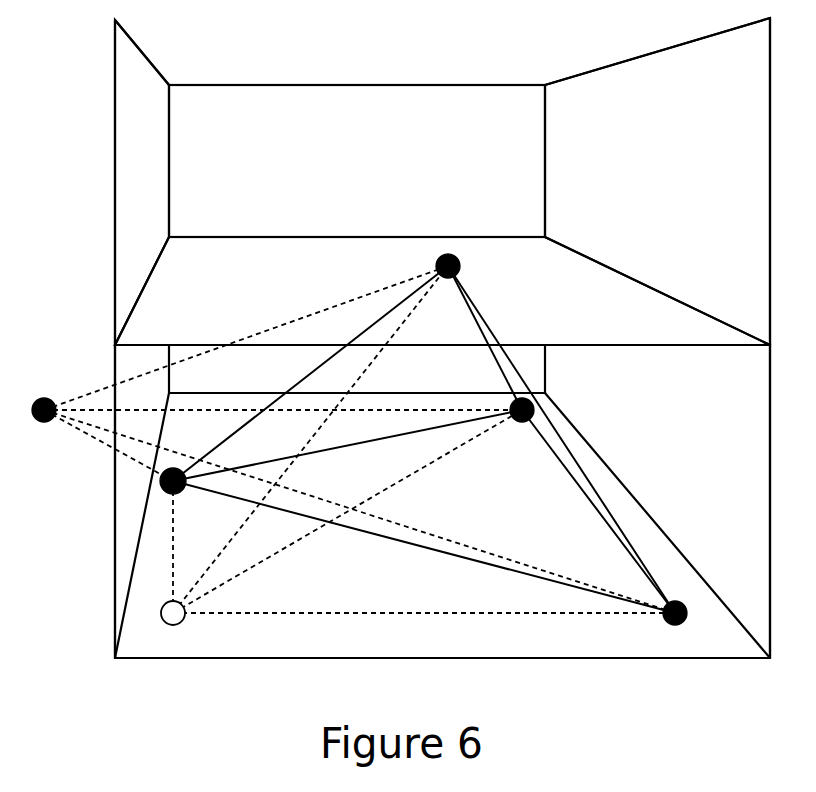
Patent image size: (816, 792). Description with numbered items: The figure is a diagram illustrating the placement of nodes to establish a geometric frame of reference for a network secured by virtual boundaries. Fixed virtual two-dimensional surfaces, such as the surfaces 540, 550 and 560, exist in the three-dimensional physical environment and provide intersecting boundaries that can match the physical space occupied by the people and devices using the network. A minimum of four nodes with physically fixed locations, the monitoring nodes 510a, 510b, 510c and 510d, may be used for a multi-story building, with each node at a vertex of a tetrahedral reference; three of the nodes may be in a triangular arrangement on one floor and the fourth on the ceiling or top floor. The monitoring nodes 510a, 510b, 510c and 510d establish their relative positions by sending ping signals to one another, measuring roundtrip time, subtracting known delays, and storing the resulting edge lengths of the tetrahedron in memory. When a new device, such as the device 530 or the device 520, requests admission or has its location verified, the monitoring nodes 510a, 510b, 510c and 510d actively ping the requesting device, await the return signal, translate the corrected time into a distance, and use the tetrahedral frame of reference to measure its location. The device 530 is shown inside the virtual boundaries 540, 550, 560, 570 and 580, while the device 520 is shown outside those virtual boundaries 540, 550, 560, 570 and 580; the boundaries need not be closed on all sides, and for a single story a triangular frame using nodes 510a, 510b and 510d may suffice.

The monitoring node 510a is at (687, 610).
The monitoring node 510b is at (520, 422).
The monitoring node 510c is at (460, 259).
The monitoring node 510d is at (185, 486).
The device 520 is at (50, 422).
The device 530 is at (181, 622).
The virtual boundary surface 540 is at (160, 183).
The virtual boundary surface 550 is at (373, 166).
The virtual boundary surface 560 is at (671, 195).
The virtual boundary 570 is at (560, 644).
The virtual boundary 580 is at (605, 316).